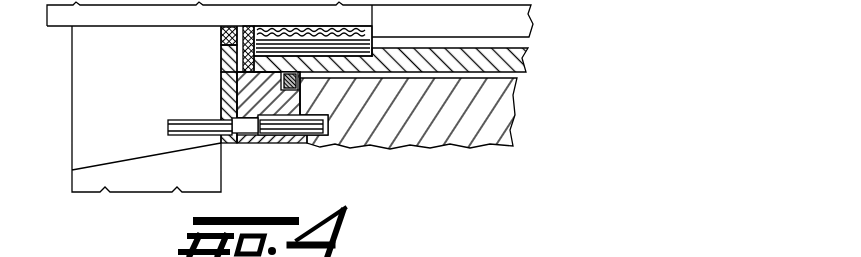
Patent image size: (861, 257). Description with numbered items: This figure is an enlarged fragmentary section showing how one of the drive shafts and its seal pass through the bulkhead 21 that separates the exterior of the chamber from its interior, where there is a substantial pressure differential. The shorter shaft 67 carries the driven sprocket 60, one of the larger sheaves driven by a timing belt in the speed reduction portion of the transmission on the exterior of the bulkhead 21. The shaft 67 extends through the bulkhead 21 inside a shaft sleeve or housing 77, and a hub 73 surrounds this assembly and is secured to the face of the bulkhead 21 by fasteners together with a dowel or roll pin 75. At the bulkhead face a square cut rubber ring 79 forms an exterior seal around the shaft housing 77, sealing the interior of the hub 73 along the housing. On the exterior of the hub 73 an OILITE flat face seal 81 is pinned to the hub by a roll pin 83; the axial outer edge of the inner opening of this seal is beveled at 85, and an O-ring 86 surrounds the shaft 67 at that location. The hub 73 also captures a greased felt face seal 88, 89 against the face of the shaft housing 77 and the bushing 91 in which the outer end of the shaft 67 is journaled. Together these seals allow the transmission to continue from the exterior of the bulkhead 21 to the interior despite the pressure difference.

The bulkhead 21 is at (447, 133).
The driven sprocket 60 is at (72, 91).
The shaft 67 is at (513, 20).
The hub 73 is at (270, 143).
The roll pin 75 is at (300, 140).
The shaft housing 77 is at (510, 57).
The square cut rubber ring seal 79 is at (300, 86).
The OILITE flat face seal 81 is at (226, 80).
The roll pin 83 is at (170, 127).
The bevel 85 is at (227, 50).
The O-ring 86 is at (220, 32).
The greased felt face seal 88 is at (187, 13).
The greased felt face seal 89 is at (247, 28).
The bushing 91 is at (353, 32).